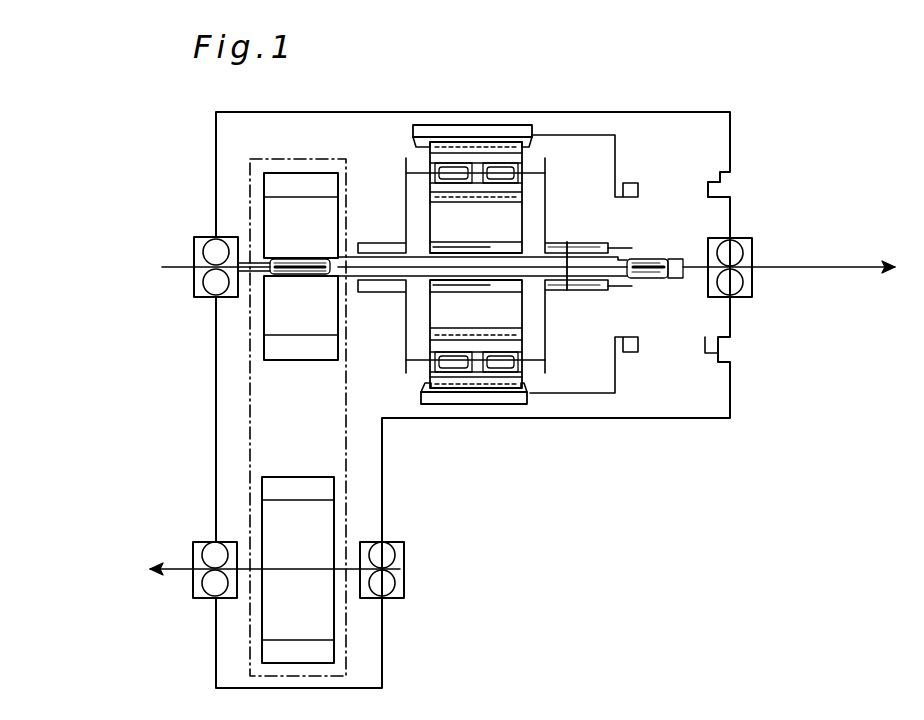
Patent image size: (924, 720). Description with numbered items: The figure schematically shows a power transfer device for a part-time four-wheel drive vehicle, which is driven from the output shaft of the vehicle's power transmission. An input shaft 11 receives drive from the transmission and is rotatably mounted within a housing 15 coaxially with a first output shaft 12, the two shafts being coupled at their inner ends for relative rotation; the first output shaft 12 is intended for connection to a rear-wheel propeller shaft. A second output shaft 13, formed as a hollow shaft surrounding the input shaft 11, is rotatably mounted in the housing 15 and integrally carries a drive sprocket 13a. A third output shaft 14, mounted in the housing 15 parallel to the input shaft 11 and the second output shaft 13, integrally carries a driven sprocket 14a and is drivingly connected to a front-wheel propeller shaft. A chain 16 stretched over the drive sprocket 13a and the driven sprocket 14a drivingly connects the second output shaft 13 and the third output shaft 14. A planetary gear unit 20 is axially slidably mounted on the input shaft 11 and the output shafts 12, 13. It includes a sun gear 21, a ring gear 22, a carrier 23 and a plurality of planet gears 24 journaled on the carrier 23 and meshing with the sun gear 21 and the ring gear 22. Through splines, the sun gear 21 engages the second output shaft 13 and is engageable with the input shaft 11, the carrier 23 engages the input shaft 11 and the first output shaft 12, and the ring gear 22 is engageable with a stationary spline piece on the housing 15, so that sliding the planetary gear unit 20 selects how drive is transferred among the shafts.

The input shaft 11 is at (172, 270).
The first output shaft 12 is at (838, 272).
The second output shaft 13 is at (383, 281).
The drive sprocket 13a is at (303, 353).
The third output shaft 14 is at (173, 575).
The driven sprocket 14a is at (290, 487).
The housing 15 is at (216, 412).
The chain 16 is at (248, 453).
The planetary gear unit 20 is at (500, 123).
The sun gear 21 is at (515, 232).
The ring gear 22 is at (448, 128).
The carrier 23 is at (548, 345).
The planet gears 24 is at (515, 373).